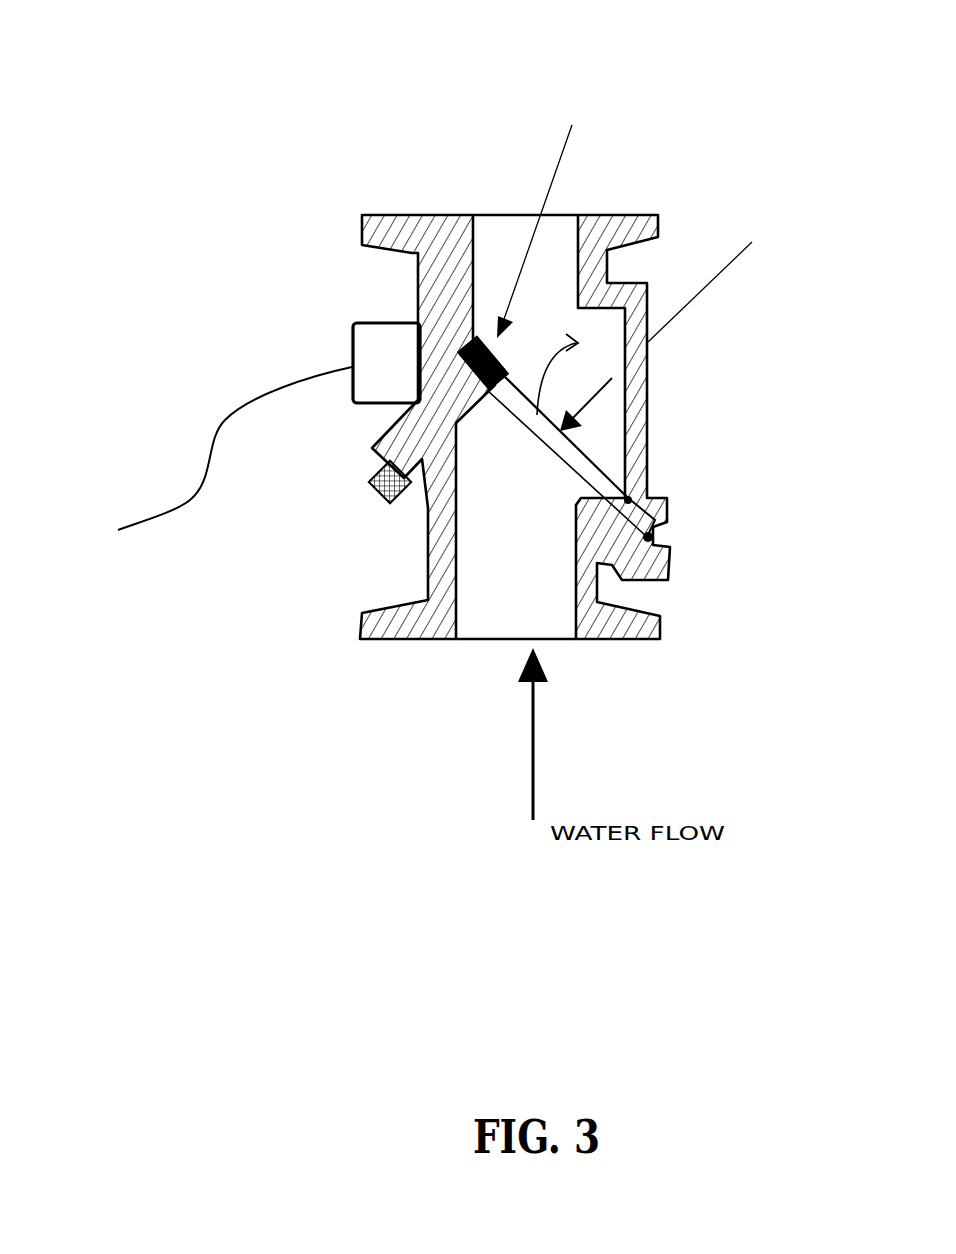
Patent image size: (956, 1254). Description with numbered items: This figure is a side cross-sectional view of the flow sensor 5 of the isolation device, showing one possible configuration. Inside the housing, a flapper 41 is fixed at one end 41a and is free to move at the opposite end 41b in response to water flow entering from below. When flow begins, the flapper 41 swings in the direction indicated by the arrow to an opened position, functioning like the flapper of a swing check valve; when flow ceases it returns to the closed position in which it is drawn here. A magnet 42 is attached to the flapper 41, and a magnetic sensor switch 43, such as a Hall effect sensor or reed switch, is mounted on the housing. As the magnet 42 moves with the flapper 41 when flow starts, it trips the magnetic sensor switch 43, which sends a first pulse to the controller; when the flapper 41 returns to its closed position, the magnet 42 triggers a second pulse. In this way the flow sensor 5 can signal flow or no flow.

The flow sensor 5 is at (140, 150).
The flapper 41 is at (585, 457).
The fixed end of flapper 41a is at (658, 497).
The free end of flapper 41b is at (477, 337).
The magnet 42 is at (483, 392).
The magnetic sensor switch 43 is at (352, 342).